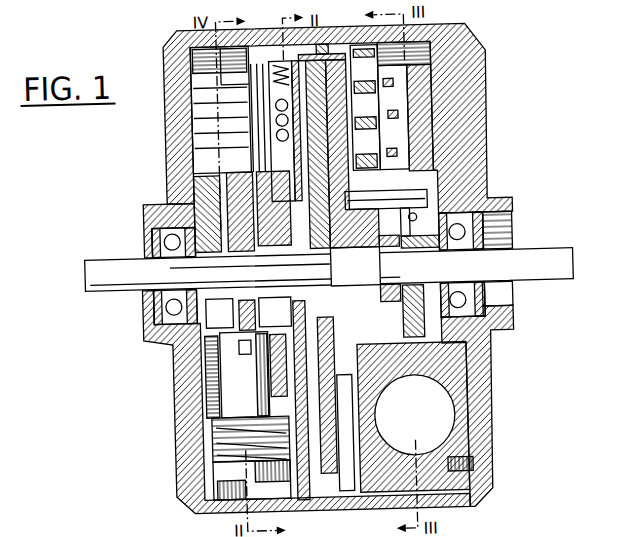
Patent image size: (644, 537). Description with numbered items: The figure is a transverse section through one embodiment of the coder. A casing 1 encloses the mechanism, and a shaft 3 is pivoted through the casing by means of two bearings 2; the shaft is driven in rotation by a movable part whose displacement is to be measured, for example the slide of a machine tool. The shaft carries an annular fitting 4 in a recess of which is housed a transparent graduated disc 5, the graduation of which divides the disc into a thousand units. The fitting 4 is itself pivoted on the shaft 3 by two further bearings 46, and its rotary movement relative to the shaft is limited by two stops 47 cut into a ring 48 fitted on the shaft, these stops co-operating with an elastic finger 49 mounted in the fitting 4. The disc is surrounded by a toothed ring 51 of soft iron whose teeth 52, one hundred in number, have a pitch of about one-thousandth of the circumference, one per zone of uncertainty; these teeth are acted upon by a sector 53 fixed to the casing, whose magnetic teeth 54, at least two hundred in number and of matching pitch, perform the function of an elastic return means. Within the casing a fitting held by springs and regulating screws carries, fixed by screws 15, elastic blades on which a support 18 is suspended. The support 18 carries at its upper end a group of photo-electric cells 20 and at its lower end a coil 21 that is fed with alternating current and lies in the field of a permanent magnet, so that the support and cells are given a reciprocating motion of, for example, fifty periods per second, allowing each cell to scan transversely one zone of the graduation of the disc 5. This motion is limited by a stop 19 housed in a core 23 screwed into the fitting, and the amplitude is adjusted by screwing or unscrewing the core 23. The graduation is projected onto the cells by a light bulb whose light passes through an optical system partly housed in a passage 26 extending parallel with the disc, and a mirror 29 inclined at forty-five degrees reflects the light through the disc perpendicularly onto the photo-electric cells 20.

The casing 1 is at (475, 42).
The bearings 2 is at (154, 228).
The shaft 3 is at (560, 259).
The annular fitting 4 is at (352, 220).
The transparent graduated disc 5 is at (328, 150).
The screws 15 is at (224, 167).
The support 18 is at (239, 211).
The stop 19 is at (228, 347).
The photo-electric cells 20 is at (281, 113).
The coil 21 is at (238, 342).
The core 23 is at (245, 375).
The passage 26 is at (442, 407).
The mirror 29 is at (423, 120).
The bearings 46 is at (330, 252).
The stops 47 is at (488, 222).
The ring 48 is at (412, 287).
The elastic finger 49 is at (420, 219).
The toothed ring 51 is at (349, 110).
The teeth 52 is at (352, 63).
The sector 53 is at (282, 61).
The teeth 54 is at (331, 33).